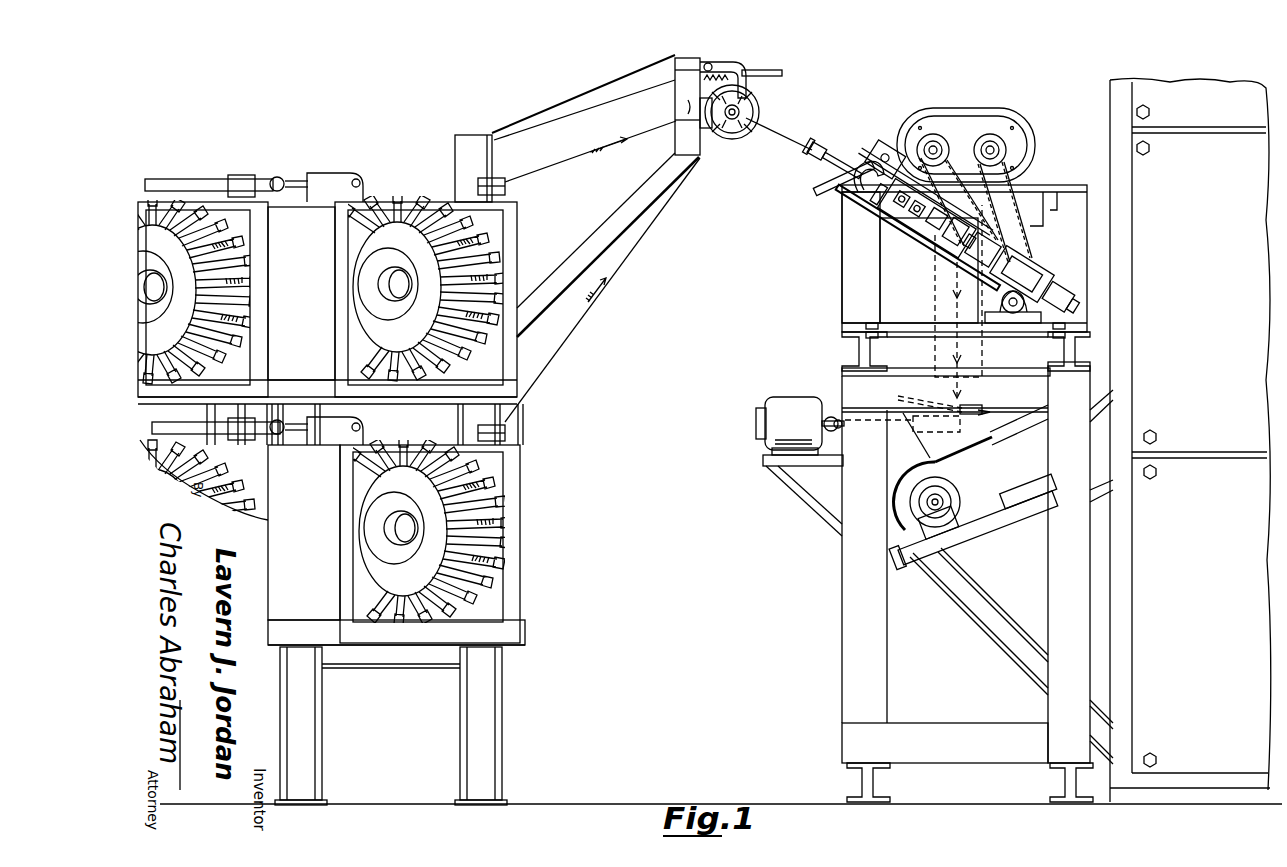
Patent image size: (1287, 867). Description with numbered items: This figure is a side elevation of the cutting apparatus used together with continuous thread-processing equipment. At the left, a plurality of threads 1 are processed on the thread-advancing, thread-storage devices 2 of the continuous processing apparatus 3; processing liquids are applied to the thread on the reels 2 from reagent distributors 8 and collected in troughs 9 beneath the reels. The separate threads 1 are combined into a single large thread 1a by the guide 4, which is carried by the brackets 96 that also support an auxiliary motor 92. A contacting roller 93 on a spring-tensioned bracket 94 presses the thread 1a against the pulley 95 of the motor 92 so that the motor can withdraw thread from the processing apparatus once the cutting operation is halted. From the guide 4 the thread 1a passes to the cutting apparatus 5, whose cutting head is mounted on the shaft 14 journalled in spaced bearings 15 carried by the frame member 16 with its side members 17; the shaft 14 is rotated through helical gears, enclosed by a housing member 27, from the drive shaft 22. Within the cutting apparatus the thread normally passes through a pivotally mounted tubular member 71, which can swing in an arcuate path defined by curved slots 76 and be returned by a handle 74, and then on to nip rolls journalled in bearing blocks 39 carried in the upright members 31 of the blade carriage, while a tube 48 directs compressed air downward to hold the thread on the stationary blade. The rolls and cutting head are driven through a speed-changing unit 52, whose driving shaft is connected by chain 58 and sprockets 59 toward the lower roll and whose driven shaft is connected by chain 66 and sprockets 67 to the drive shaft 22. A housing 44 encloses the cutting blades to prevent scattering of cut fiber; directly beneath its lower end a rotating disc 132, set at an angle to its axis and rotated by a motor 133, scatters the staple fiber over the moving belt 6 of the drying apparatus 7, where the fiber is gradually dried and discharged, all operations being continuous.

The threads 1 is at (552, 160).
The single large thread 1a is at (792, 140).
The thread-advancing, thread-storage devices 2 is at (195, 206).
The continuous processing apparatus 3 is at (520, 514).
The guide 4 is at (686, 108).
The cutting apparatus 5 is at (834, 290).
The moving belt 6 is at (990, 446).
The drying apparatus 7 is at (1215, 390).
The reagent distributors 8 is at (345, 178).
The troughs 9 is at (428, 385).
The shaft 14 is at (1076, 332).
The bearings 15 is at (998, 258).
The frame member 16 is at (874, 207).
The side members 17 is at (914, 316).
The shaft 22 is at (1012, 332).
The housing member 27 is at (1036, 268).
The upright members 31 is at (904, 226).
The bearing blocks 39 is at (904, 259).
The housing 44 is at (942, 356).
The tube 48 is at (938, 227).
The speed-changing unit 52 is at (1028, 120).
The chain 58 is at (915, 158).
The sprockets 59 is at (936, 146).
The chain 66 is at (1024, 240).
The sprockets 67 is at (990, 146).
The tubular member 71 is at (826, 150).
The handle 74 is at (862, 163).
The curved slots 76 is at (832, 193).
The auxiliary motor 92 is at (728, 138).
The contacting roller 93 is at (748, 102).
The spring-tensioned bracket 94 is at (735, 70).
The pulley 95 is at (738, 132).
The brackets 96 is at (675, 74).
The rotating disc 132 is at (976, 408).
The motor 133 is at (768, 404).